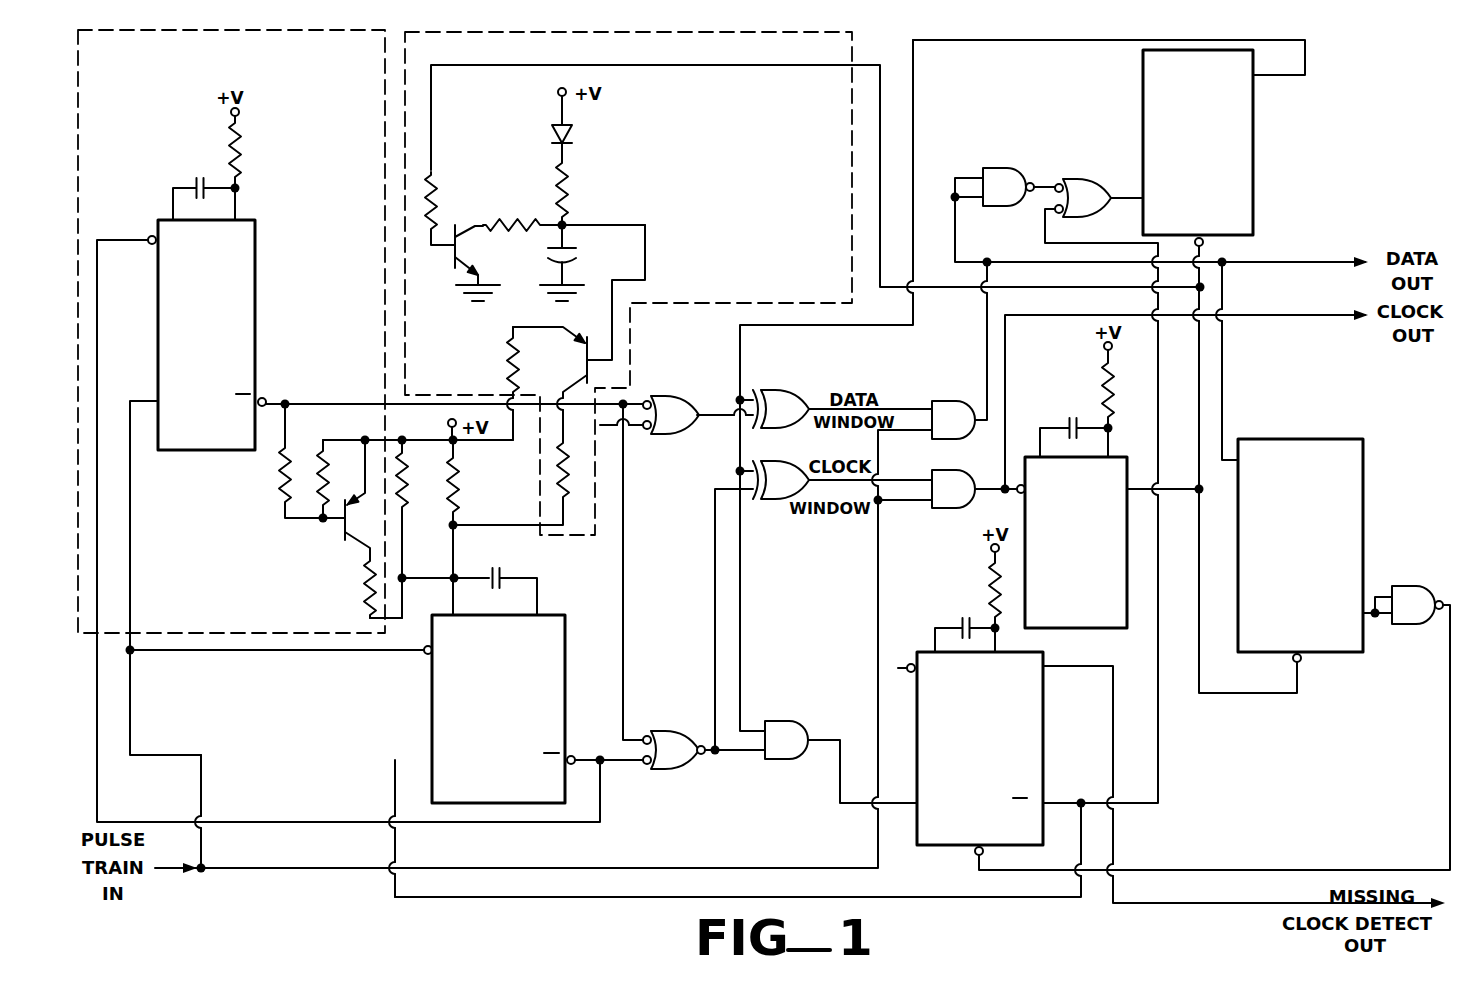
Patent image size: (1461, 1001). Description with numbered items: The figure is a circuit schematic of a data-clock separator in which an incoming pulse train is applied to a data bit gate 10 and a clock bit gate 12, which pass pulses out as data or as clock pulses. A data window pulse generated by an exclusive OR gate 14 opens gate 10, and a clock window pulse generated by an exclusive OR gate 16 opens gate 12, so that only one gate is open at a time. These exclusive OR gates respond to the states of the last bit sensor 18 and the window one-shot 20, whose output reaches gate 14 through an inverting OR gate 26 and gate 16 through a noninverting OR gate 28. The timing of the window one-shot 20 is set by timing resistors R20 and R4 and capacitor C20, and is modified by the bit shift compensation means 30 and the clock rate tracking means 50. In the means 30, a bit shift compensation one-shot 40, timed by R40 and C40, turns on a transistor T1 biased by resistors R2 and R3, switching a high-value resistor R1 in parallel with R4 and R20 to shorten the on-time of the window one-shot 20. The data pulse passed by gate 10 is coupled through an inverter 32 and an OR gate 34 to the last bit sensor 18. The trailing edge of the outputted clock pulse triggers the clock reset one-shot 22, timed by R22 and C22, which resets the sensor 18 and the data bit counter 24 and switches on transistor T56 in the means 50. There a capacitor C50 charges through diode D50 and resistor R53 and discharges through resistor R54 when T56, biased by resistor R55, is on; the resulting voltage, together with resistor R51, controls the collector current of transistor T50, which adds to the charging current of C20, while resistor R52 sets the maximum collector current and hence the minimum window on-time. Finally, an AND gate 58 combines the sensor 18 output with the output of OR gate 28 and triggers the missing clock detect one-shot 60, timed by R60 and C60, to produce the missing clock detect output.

The bit shift compensation means 30 is at (231, 331).
The clock rate tracking means 50 is at (628, 283).
The bit shift compensation one-shot 40 is at (224, 439).
The window one-shot 20 is at (479, 794).
The clock reset one-shot 22 is at (1056, 625).
The data bit counter 24 is at (1284, 596).
The last bit sensor 18 is at (1182, 221).
The missing clock detect one-shot 60 is at (954, 800).
The inverting OR gate 26 is at (660, 396).
The noninverting OR gate 28 is at (666, 768).
The AND gate 58 is at (792, 759).
The exclusive OR gate 14 is at (790, 390).
The exclusive OR gate 16 is at (776, 500).
The data bit gate 10 is at (945, 400).
The clock bit gate 12 is at (943, 509).
The inverter 32 is at (1006, 168).
The OR gate 34 is at (1086, 183).
The resistor R40 is at (259, 168).
The capacitor C40 is at (203, 188).
The resistor R3 is at (283, 461).
The resistor R2 is at (341, 479).
The resistor R1 is at (365, 588).
The transistor T1 is at (353, 500).
The trimming resistor R4 is at (417, 529).
The timing resistor R20 is at (481, 527).
The capacitor C20 is at (469, 580).
The resistor R51 is at (488, 383).
The transistor T50 is at (579, 317).
The resistor R52 is at (511, 467).
The resistor R55 is at (452, 208).
The resistor R54 is at (522, 215).
The transistor T56 is at (485, 263).
The resistor R53 is at (587, 204).
The diode D50 is at (590, 128).
The capacitor C50 is at (592, 263).
The resistor R22 is at (1085, 403).
The capacitor C22 is at (1074, 426).
The resistor R60 is at (974, 602).
The capacitor C60 is at (965, 625).